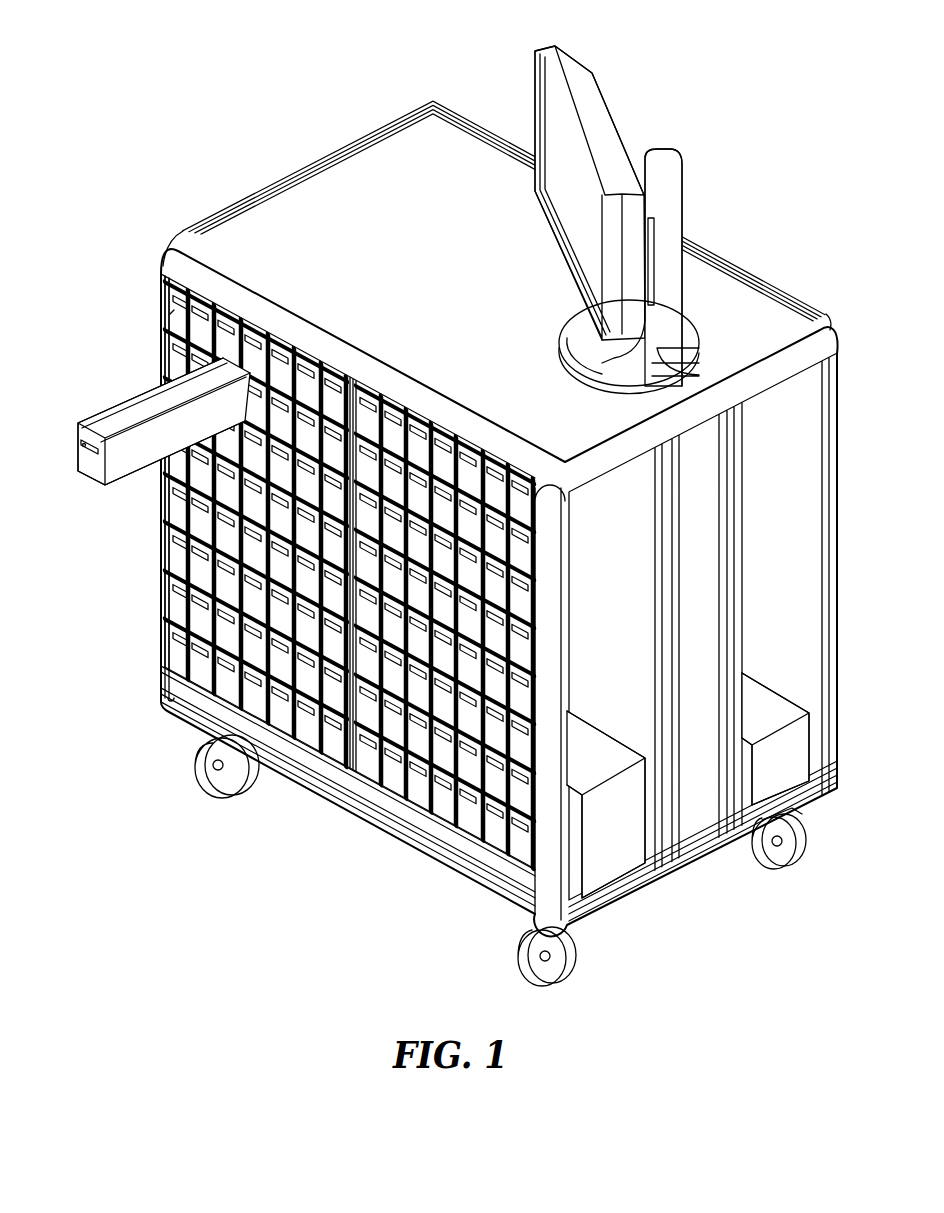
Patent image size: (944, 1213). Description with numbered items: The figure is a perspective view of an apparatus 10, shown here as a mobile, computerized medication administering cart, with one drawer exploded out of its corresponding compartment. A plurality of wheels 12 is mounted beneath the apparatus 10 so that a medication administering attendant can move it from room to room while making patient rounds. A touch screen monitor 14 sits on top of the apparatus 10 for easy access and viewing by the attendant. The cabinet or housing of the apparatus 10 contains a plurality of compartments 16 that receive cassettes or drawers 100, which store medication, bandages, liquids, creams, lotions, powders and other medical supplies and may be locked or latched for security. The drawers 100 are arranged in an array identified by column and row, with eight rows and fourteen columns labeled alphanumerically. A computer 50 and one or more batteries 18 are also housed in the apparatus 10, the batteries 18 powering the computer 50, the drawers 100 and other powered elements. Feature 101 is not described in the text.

The apparatus 10 is at (148, 148).
The wheels 12 is at (200, 780).
The touch screen monitor 14 is at (508, 76).
The compartments 16 is at (167, 352).
The batteries 18 is at (775, 739).
The computer 50 is at (606, 804).
The drawers 100 is at (86, 400).
The drawer handle slot 101 is at (170, 442).